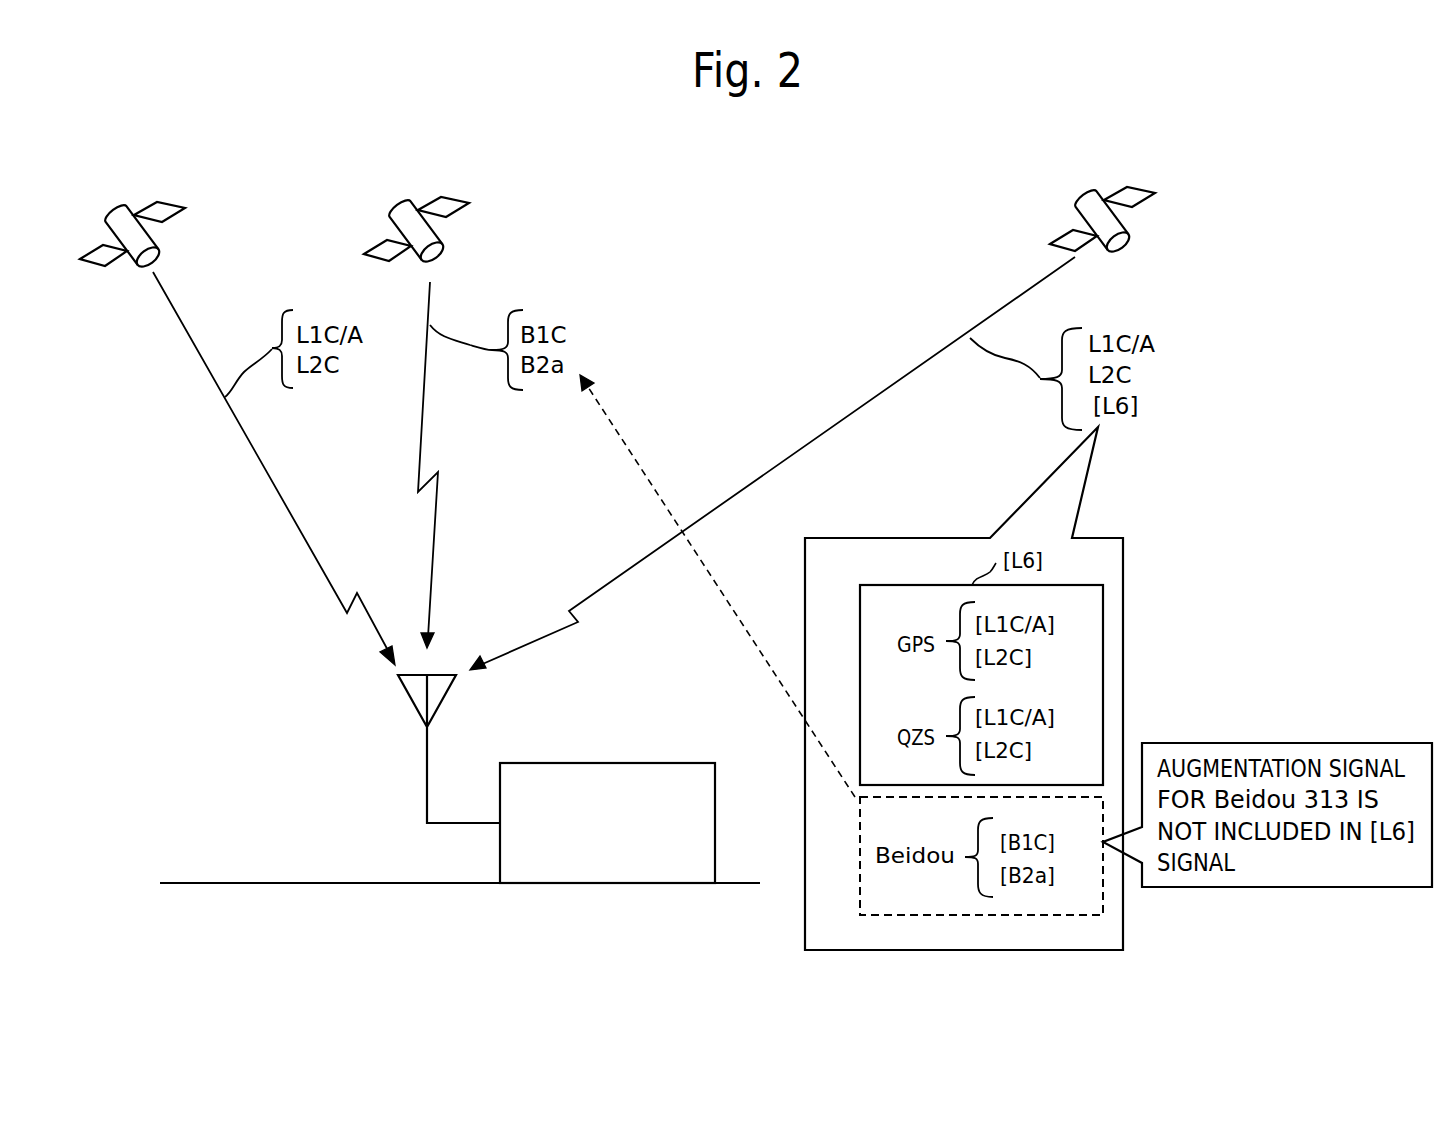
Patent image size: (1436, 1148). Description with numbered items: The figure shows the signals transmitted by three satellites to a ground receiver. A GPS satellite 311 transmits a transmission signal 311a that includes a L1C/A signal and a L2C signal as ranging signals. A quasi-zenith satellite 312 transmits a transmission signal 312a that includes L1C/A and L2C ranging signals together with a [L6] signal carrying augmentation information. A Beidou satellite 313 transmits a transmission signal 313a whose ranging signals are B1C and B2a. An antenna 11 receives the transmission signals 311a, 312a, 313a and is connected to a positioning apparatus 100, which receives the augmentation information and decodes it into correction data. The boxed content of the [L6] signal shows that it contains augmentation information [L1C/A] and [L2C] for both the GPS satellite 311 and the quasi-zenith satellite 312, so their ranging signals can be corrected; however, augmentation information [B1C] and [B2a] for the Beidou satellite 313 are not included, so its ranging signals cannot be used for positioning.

The GPS satellite 311 is at (107, 214).
The Beidou satellite 313 is at (391, 209).
The quasi-zenith satellite 312 is at (1072, 203).
The transmission signal 311a is at (278, 492).
The transmission signal 313a is at (442, 515).
The transmission signal 312a is at (817, 448).
The antenna 11 is at (452, 688).
The positioning apparatus 100 is at (618, 763).